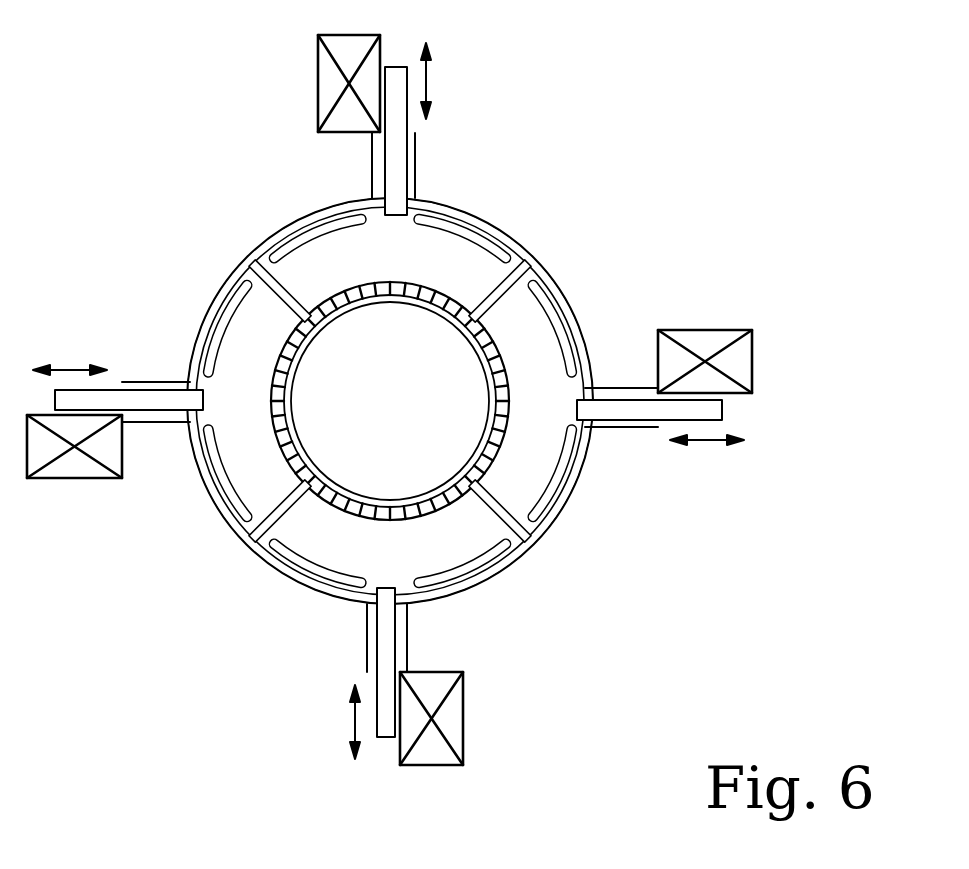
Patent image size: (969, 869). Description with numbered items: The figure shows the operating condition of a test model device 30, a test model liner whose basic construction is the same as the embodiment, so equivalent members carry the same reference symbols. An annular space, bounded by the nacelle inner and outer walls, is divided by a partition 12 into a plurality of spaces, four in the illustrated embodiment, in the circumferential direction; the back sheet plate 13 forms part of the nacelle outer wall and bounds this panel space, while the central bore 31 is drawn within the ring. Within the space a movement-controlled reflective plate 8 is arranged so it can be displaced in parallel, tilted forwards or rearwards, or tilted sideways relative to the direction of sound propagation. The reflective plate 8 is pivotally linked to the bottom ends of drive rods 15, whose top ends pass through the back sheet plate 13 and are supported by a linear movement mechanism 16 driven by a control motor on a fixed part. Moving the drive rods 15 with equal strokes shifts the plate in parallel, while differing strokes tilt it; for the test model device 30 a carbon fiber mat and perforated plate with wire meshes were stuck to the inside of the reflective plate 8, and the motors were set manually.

The test model device 30 is at (522, 183).
The movement-controlled reflective plate 8 is at (550, 313).
The partition 12 is at (291, 287).
The back sheet plate 13 is at (205, 495).
The drive rod 15 is at (634, 410).
The linear movement mechanism 16 is at (707, 342).
The inner bore ring 31 is at (473, 366).